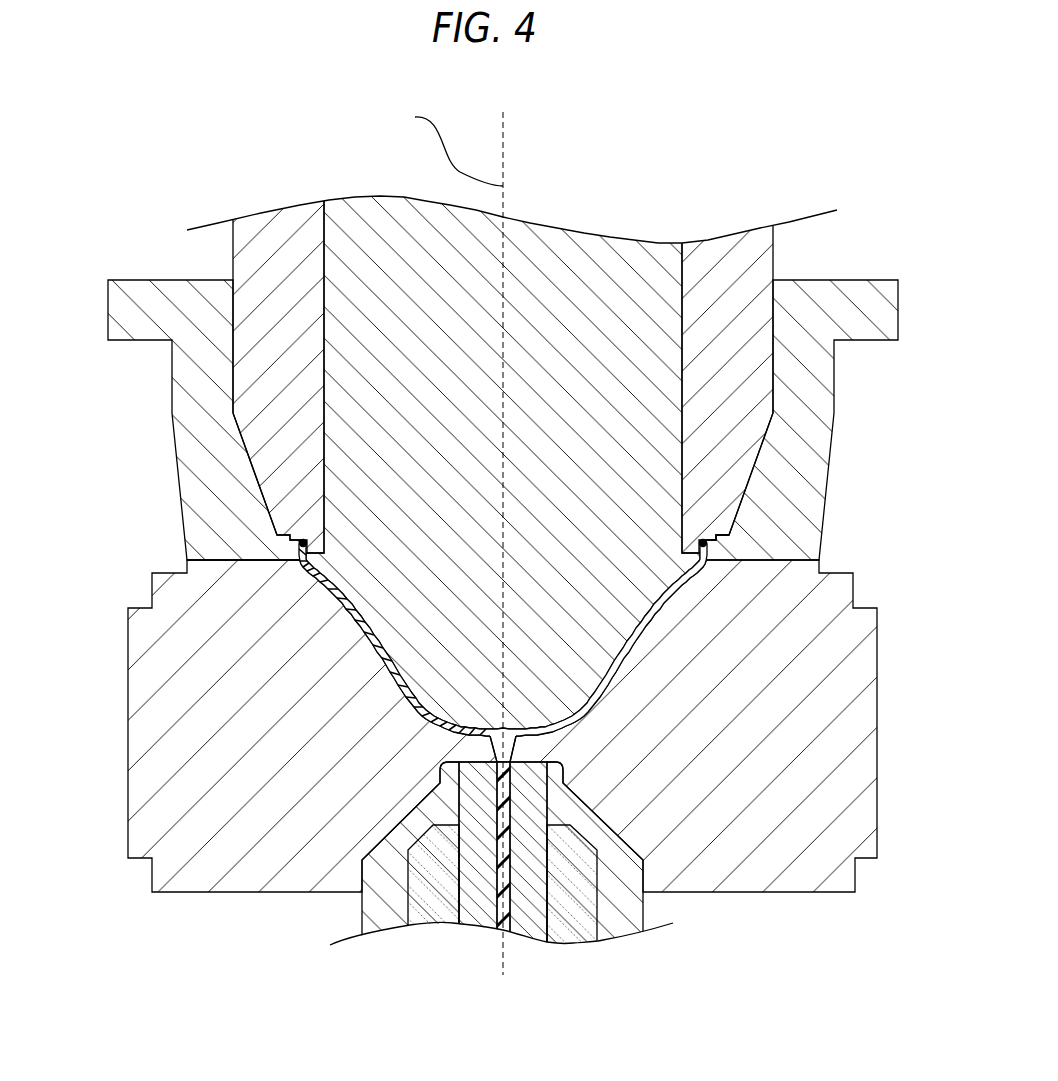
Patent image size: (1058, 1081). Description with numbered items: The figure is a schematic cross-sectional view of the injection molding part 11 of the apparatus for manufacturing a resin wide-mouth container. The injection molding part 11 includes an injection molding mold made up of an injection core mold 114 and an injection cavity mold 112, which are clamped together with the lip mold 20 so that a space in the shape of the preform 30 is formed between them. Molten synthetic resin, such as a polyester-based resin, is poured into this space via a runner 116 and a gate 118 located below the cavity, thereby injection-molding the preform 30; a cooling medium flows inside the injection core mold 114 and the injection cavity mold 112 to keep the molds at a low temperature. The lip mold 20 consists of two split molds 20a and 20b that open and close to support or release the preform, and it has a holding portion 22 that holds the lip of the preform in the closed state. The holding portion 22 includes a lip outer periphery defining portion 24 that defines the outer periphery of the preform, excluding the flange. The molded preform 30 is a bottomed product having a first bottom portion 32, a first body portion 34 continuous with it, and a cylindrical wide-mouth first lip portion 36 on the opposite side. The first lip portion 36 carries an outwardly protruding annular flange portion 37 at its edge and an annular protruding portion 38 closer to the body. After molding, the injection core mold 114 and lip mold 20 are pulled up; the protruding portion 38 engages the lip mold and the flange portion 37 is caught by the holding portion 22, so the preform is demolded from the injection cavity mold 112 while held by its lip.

The injection molding part 11 is at (500, 546).
The lip mold 20 is at (511, 420).
The split mold 20a is at (190, 478).
The split mold 20b is at (803, 467).
The holding portion 22 is at (280, 573).
The lip outer periphery defining portion 24 is at (682, 545).
The preform 30 is at (512, 661).
The first bottom portion 32 is at (427, 722).
The first body portion 34 is at (645, 622).
The first lip portion 36 is at (318, 545).
The flange portion 37 is at (712, 532).
The protruding portion 38 is at (712, 548).
The injection cavity mold 112 is at (198, 742).
The injection core mold 114 is at (555, 258).
The runner 116 is at (512, 818).
The gate 118 is at (513, 747).